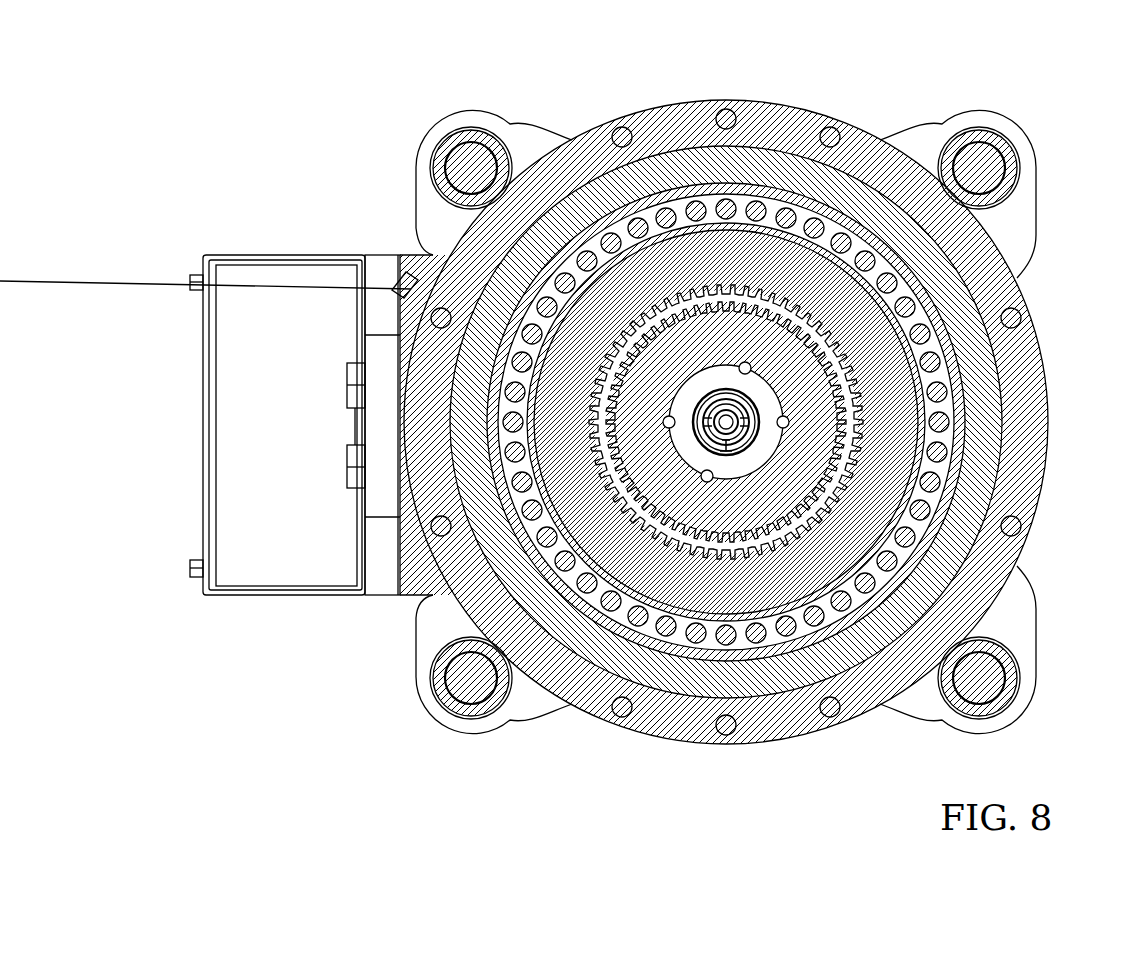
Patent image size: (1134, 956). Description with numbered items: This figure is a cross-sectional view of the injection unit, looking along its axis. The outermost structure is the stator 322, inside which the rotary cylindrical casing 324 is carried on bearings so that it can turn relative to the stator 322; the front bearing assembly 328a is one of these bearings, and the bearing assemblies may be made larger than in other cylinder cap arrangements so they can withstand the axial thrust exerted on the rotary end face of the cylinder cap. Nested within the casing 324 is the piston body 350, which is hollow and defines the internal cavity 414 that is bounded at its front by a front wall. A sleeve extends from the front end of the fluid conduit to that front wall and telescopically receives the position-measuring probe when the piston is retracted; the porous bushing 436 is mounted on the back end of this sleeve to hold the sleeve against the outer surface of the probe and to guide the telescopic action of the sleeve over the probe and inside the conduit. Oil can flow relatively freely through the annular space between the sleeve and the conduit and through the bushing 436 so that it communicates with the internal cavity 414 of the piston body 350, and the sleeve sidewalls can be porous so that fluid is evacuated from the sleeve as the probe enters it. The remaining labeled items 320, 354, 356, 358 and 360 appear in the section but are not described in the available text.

The mounting bolt holes 320 is at (997, 150).
The stator 322 is at (795, 120).
The rotary cylindrical casing 324 is at (943, 272).
The front bearing assembly 328a is at (968, 399).
The piston body 350 is at (807, 407).
The gear tooth profile 354 is at (830, 447).
The bearing inner race 356 is at (733, 555).
The gear body 358 is at (828, 456).
The bearing balls 360 is at (773, 555).
The hollow internal cavity 414 is at (770, 467).
The porous bushing 436 is at (713, 457).